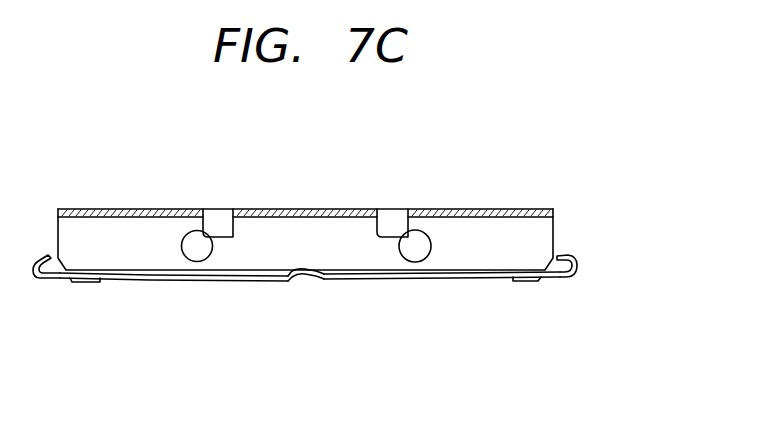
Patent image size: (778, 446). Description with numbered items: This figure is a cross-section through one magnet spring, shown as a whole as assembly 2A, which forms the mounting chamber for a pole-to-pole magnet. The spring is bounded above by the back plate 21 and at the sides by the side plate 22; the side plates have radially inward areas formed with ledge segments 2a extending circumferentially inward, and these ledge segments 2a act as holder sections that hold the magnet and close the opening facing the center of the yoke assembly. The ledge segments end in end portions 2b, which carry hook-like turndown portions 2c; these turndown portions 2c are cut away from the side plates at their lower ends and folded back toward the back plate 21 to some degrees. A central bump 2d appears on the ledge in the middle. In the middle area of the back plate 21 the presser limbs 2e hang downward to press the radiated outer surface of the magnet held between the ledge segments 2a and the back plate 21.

The cover member 2A is at (350, 177).
The back plate 21 is at (300, 208).
The side plate 22 is at (543, 233).
The presser limb 2e is at (218, 222).
The ledge segment 2a is at (400, 285).
The end portion 2b is at (88, 283).
The turndown portion 2c is at (50, 255).
The protrusion 2d is at (307, 278).